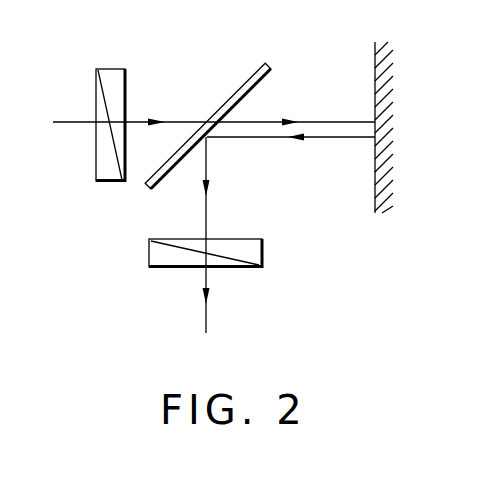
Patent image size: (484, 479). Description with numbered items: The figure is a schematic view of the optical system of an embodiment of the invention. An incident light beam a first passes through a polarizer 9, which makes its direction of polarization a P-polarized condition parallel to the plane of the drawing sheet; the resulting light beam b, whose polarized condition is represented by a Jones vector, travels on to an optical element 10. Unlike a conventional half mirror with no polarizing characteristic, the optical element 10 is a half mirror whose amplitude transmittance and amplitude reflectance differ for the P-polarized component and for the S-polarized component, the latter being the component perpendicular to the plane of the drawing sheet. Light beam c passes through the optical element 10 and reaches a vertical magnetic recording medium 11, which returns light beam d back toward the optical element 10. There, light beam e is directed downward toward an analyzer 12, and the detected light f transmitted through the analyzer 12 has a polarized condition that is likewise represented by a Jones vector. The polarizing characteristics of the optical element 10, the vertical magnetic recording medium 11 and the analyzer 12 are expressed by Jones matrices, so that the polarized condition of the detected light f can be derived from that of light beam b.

The polarizer 9 is at (115, 68).
The optical element 10 is at (245, 77).
The vertical magnetic recording medium 11 is at (389, 57).
The analyzer 12 is at (263, 250).
The incident light beam a is at (69, 120).
The light beam b is at (177, 120).
The light beam c is at (332, 122).
The light beam d is at (322, 138).
The light beam e is at (207, 162).
The detected light f is at (207, 282).